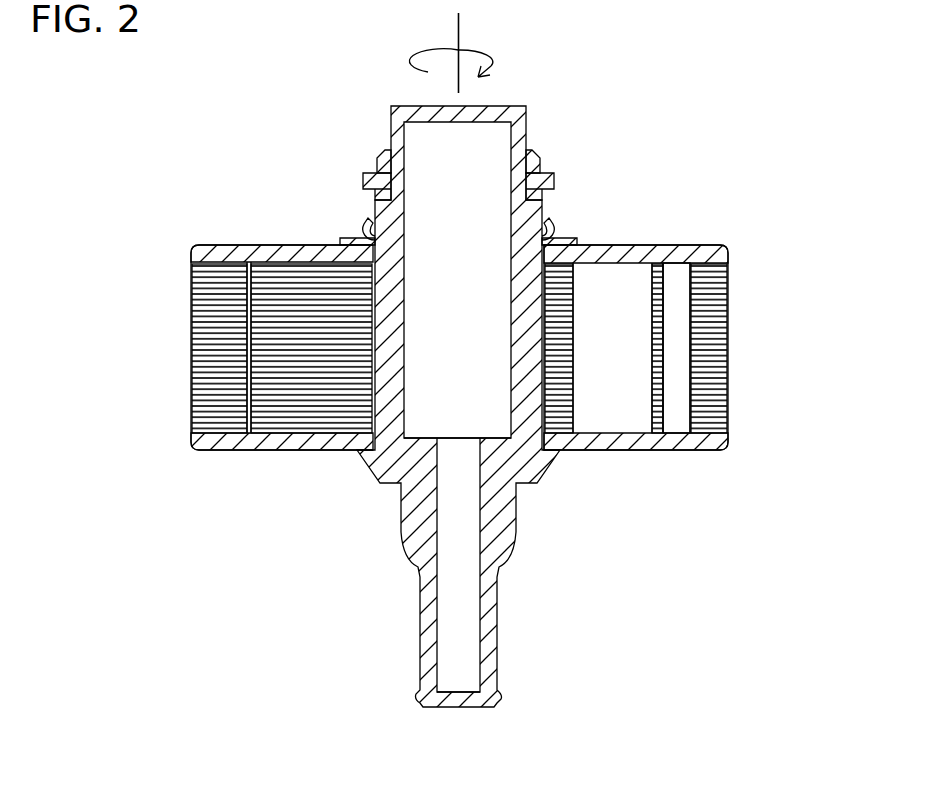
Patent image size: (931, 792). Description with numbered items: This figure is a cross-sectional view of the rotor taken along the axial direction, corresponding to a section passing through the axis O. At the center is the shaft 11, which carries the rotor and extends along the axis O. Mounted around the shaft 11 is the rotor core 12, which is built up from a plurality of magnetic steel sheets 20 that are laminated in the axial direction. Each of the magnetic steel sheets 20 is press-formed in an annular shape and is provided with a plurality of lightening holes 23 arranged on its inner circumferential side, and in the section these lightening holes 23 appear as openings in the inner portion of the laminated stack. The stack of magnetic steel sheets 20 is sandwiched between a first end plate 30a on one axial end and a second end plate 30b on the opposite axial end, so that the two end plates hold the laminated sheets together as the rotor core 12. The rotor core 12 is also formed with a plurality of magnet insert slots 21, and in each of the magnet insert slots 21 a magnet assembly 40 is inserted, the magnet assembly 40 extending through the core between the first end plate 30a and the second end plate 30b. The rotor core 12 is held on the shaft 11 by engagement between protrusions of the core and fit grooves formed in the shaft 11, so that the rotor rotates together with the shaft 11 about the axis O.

The rotation axis O is at (458, 17).
The shaft 11 is at (517, 119).
The rotor core 12 is at (763, 363).
The magnetic steel sheets 20 is at (685, 349).
The magnet insert slots 21 is at (678, 385).
The lightening holes 23 is at (577, 407).
The first end plate 30a is at (654, 256).
The second end plate 30b is at (648, 446).
The magnet assembly 40 is at (678, 313).